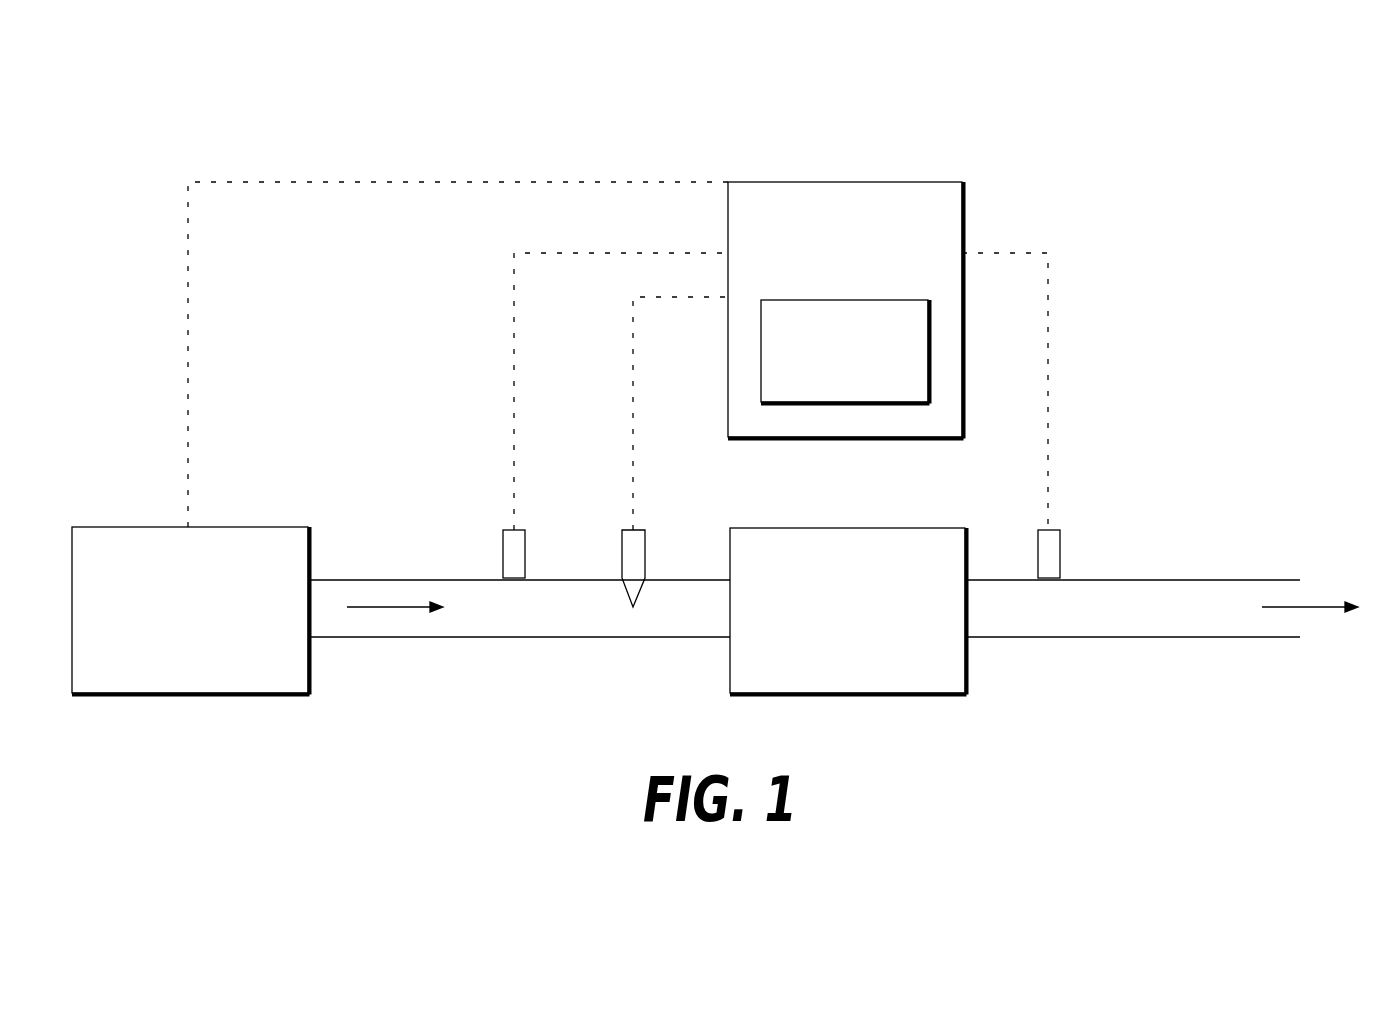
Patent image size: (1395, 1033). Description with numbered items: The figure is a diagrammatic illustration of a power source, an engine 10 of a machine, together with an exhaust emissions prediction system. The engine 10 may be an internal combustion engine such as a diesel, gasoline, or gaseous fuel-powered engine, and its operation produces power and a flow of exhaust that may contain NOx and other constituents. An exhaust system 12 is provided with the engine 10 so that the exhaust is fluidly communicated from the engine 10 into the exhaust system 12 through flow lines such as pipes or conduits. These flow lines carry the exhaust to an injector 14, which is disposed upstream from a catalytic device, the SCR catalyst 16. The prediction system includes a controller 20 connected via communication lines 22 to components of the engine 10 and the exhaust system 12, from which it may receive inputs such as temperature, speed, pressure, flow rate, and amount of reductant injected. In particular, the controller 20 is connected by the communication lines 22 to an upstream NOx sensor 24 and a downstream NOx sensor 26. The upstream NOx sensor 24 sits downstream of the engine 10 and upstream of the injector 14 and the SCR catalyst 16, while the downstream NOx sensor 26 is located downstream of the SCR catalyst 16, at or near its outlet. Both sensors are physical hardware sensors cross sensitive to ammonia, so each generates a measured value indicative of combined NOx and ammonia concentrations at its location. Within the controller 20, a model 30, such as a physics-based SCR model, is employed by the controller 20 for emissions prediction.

The engine 10 is at (101, 527).
The exhaust system 12 is at (1186, 115).
The injector 14 is at (645, 557).
The SCR catalyst 16 is at (878, 528).
The controller 20 is at (845, 182).
The communication lines 22 is at (567, 182).
The upstream NOx sensor 24 is at (525, 557).
The downstream NOx sensor 26 is at (1060, 557).
The model 30 is at (816, 300).